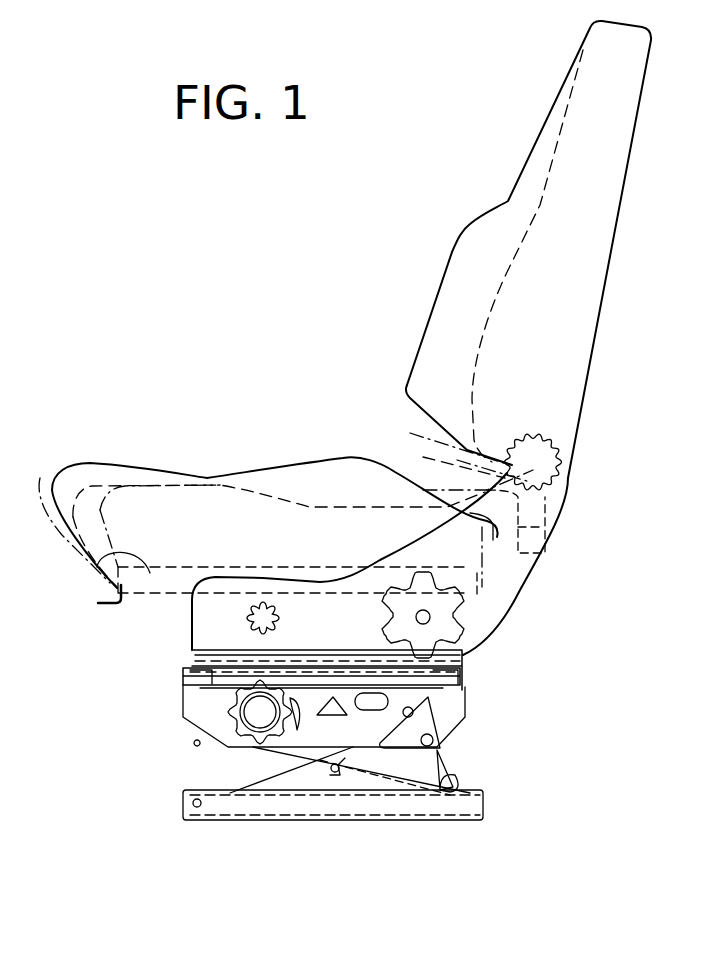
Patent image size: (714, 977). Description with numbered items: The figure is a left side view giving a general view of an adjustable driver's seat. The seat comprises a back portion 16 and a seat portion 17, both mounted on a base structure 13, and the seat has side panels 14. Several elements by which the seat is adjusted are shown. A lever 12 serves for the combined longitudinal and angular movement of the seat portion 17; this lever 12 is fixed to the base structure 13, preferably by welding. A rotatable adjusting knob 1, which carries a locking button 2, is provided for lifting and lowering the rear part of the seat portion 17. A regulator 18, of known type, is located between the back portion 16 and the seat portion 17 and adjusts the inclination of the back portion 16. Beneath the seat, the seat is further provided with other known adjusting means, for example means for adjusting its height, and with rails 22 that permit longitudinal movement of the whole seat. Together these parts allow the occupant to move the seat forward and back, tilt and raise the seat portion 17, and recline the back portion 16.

The rotatable adjusting knob 1 is at (450, 623).
The locking button 2 is at (428, 622).
The lever 12 is at (101, 605).
The base structure 13 is at (86, 561).
The side panels 14 is at (500, 625).
The back portion 16 is at (463, 233).
The seat portion 17 is at (327, 455).
The regulator 18 is at (568, 472).
The rails 22 is at (192, 653).